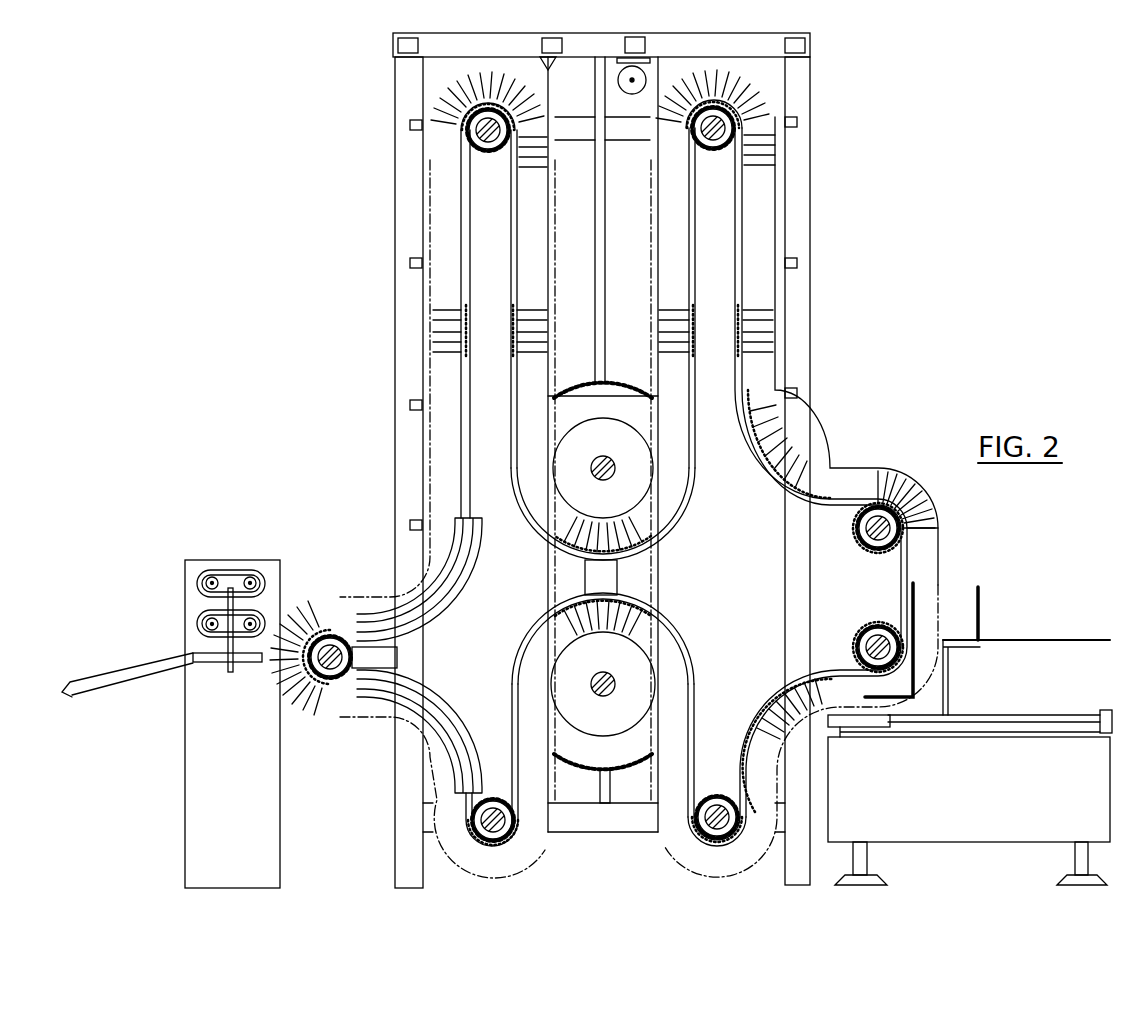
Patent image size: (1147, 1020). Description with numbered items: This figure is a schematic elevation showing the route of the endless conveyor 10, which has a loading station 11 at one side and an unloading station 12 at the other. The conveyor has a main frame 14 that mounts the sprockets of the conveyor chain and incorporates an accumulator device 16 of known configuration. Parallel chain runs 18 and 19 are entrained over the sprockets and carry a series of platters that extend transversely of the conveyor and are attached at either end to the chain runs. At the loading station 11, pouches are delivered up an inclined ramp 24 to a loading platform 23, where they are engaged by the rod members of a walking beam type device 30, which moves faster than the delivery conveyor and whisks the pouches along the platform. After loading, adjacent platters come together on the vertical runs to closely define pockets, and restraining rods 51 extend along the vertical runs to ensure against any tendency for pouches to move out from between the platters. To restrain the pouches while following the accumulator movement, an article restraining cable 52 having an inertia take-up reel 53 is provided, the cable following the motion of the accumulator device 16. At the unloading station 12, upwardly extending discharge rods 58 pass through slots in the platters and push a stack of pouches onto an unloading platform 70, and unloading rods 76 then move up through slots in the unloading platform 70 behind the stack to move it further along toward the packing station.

The endless conveyor 10 is at (848, 207).
The loading station 11 is at (300, 553).
The unloading station 12 is at (993, 586).
The main frame 14 is at (398, 225).
The accumulator device 16 is at (640, 475).
The chain run 18 is at (460, 178).
The chain run 19 is at (744, 108).
The loading platform 23 is at (250, 663).
The inclined ramp 24 is at (118, 690).
The walking beam type device 30 is at (197, 622).
The restraining rods 51 is at (422, 282).
The article restraining cable 52 is at (548, 78).
The inertia take-up reel 53 is at (642, 76).
The discharge rods 58 is at (916, 595).
The unloading platform 70 is at (1067, 638).
The unloading rods 76 is at (985, 615).